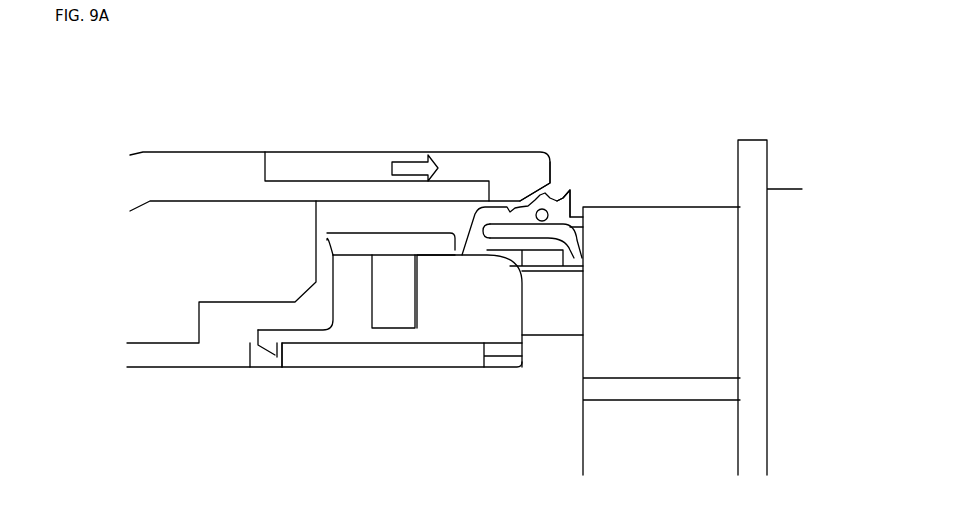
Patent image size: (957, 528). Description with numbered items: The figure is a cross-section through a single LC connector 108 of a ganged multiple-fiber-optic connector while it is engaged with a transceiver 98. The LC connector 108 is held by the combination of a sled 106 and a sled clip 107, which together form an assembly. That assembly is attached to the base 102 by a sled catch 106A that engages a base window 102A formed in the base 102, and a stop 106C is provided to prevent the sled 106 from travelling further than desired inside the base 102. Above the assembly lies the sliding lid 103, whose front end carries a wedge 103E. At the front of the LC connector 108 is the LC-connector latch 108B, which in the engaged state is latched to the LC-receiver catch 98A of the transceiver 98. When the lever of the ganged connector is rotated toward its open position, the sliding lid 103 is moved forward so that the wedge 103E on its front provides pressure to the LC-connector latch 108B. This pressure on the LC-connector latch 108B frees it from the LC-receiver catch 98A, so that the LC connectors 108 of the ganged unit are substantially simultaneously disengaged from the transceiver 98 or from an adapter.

The transceiver 98 is at (765, 293).
The LC-receiver catch 98A is at (683, 243).
The base 102 is at (182, 362).
The base window 102A is at (253, 367).
The sliding lid 103 is at (237, 166).
The wedge 103E is at (528, 187).
The sled 106 is at (445, 328).
The sled catch 106A is at (275, 343).
The stop 106C is at (500, 350).
The sled clip 107 is at (387, 313).
The LC connector 108 is at (537, 317).
The LC-connector latch 108B is at (571, 189).